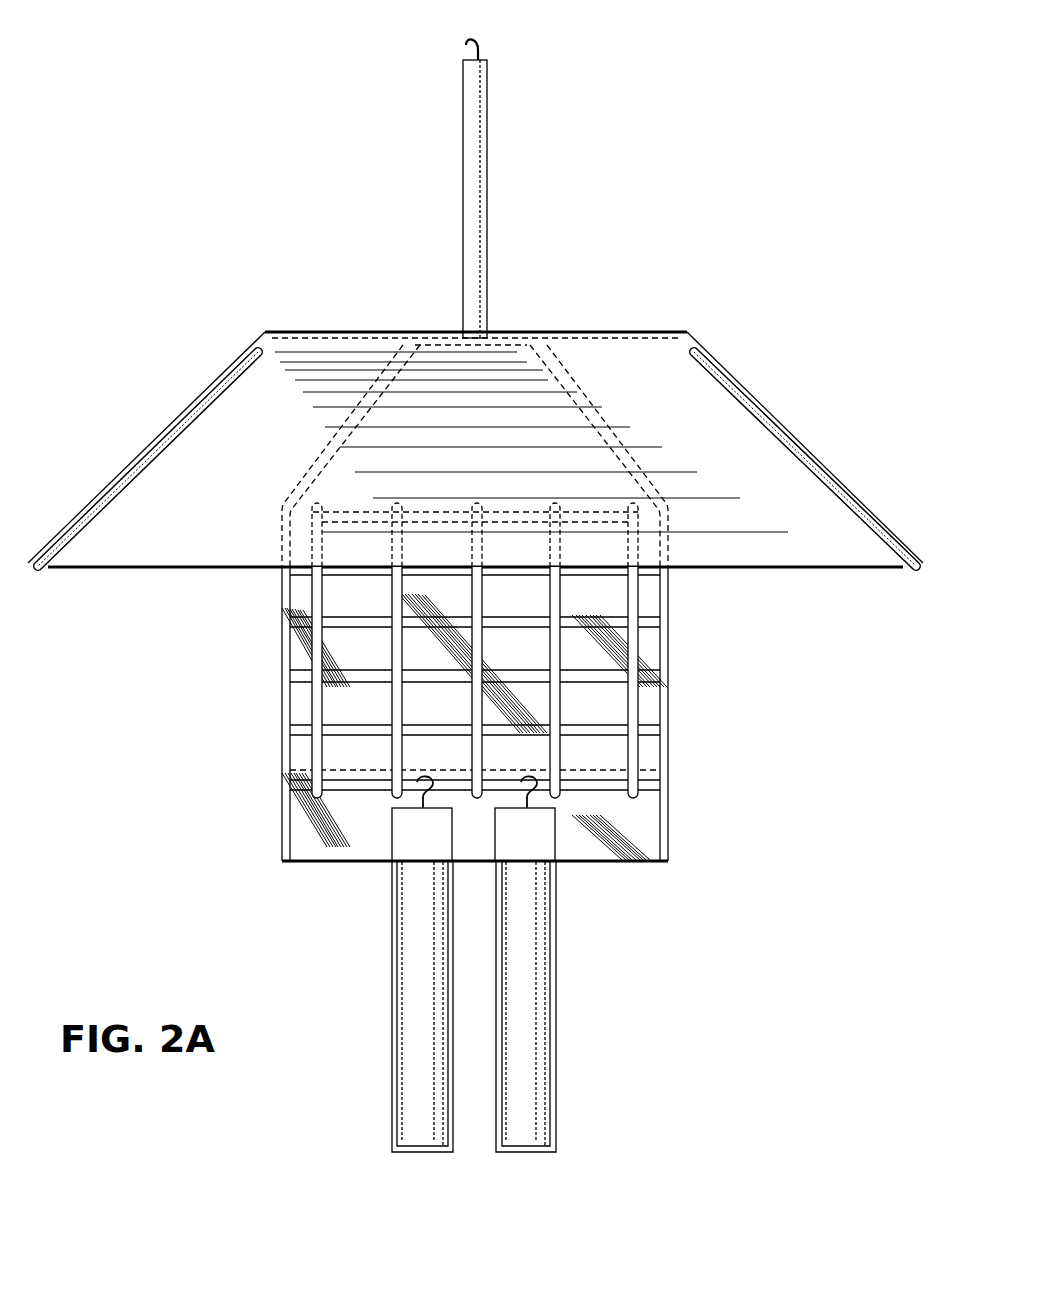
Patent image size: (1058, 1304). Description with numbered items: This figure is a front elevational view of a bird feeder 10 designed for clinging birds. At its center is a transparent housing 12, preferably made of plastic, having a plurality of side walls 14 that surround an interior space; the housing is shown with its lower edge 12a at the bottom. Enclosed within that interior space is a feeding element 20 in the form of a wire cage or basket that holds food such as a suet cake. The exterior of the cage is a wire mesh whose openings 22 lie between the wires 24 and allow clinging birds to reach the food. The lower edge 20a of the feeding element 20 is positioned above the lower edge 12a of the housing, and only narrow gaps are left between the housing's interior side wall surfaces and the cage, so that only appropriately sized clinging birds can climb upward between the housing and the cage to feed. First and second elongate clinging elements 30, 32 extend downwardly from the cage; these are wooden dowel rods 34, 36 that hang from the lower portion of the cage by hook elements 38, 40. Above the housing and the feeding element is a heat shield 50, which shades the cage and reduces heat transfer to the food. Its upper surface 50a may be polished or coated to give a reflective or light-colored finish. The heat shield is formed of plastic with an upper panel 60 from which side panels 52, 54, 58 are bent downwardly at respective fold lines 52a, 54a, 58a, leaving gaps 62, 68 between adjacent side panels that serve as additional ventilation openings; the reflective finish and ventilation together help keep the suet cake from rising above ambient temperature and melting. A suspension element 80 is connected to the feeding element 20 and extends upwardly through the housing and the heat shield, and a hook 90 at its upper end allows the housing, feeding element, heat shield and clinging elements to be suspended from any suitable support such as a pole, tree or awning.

The bird feeder 10 is at (114, 277).
The transparent housing 12 is at (456, 643).
The lower edge of the transparent housing 12a is at (597, 863).
The side walls 14 is at (300, 490).
The feeding element 20 is at (456, 668).
The lower edge of the feeding element 20a is at (357, 790).
The openings 22 is at (592, 658).
The wires 24 is at (338, 790).
The first elongate clinging element 30 is at (481, 1007).
The second elongate clinging element 32 is at (564, 1007).
The wooden dowel rod 34 is at (425, 1015).
The wooden dowel rod 36 is at (522, 968).
The hook element 38 is at (421, 775).
The hook element 40 is at (533, 775).
The heat shield 50 is at (780, 346).
The upper surface 50a is at (298, 445).
The side panel 52 is at (190, 535).
The fold line 52a is at (602, 331).
The side panel 54 is at (183, 410).
The fold line 54a is at (263, 331).
The side panel 58 is at (830, 462).
The fold line 58a is at (693, 331).
The upper panel 60 is at (380, 331).
The gap 62 is at (142, 457).
The gap 68 is at (790, 440).
The suspension element 80 is at (489, 123).
The hook 90 is at (492, 42).